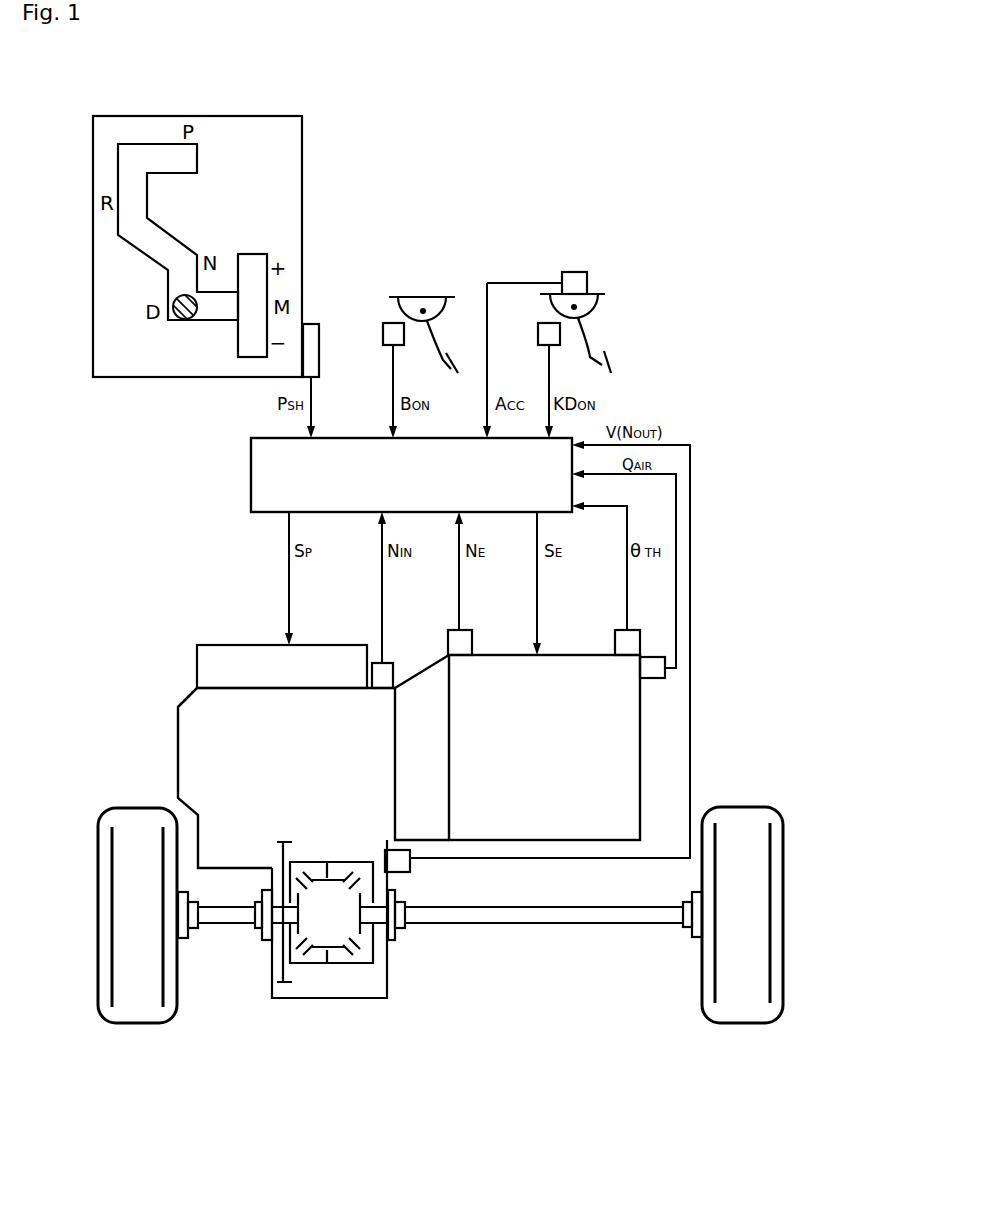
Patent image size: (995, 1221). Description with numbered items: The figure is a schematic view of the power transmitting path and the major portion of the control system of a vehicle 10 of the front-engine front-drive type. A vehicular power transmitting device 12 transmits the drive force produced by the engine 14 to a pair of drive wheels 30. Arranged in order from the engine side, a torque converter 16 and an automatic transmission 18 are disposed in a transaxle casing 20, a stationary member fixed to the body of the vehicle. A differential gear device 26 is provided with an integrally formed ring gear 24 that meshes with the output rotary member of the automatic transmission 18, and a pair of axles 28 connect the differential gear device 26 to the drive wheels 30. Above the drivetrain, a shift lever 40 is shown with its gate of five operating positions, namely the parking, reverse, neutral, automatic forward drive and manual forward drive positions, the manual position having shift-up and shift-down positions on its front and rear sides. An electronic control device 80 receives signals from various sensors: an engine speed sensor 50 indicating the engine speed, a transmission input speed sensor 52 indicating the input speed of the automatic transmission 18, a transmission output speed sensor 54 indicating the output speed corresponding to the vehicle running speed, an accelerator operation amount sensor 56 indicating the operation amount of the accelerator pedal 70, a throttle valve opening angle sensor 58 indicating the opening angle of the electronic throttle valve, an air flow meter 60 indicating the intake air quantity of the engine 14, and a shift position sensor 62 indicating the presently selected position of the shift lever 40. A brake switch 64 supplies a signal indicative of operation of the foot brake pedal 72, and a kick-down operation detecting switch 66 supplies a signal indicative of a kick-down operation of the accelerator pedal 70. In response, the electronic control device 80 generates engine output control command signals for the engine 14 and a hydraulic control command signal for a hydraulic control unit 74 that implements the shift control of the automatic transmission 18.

The vehicle 10 is at (568, 125).
The vehicular power transmitting device 12 is at (185, 575).
The engine 14 is at (593, 667).
The torque converter 16 is at (430, 675).
The automatic transmission 18 is at (183, 747).
The transaxle casing 20 is at (187, 695).
The ring gear 24 is at (291, 985).
The differential gear device 26 is at (371, 978).
The axles 28 is at (220, 915).
The drive wheels 30 is at (139, 1012).
The shift lever 40 is at (177, 322).
The engine speed sensor 50 is at (462, 645).
The transmission input speed sensor 52 is at (390, 672).
The transmission output speed sensor 54 is at (400, 863).
The accelerator operation amount sensor 56 is at (578, 272).
The throttle valve opening angle sensor 58 is at (632, 643).
The air flow meter 60 is at (652, 678).
The shift position sensor 62 is at (310, 327).
The brake switch 64 is at (389, 345).
The kick-down operation detecting switch 66 is at (545, 345).
The accelerator pedal 70 is at (613, 367).
The foot brake pedal 72 is at (458, 373).
The hydraulic control unit 74 is at (248, 652).
The electronic control device 80 is at (269, 448).